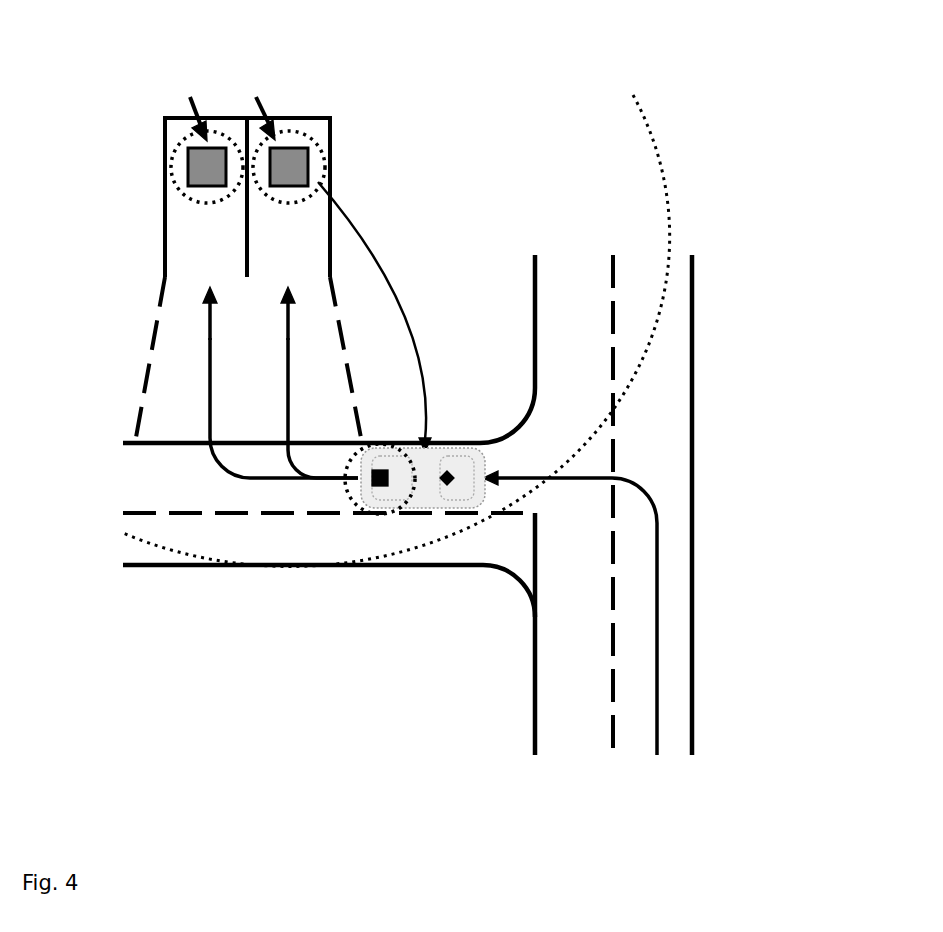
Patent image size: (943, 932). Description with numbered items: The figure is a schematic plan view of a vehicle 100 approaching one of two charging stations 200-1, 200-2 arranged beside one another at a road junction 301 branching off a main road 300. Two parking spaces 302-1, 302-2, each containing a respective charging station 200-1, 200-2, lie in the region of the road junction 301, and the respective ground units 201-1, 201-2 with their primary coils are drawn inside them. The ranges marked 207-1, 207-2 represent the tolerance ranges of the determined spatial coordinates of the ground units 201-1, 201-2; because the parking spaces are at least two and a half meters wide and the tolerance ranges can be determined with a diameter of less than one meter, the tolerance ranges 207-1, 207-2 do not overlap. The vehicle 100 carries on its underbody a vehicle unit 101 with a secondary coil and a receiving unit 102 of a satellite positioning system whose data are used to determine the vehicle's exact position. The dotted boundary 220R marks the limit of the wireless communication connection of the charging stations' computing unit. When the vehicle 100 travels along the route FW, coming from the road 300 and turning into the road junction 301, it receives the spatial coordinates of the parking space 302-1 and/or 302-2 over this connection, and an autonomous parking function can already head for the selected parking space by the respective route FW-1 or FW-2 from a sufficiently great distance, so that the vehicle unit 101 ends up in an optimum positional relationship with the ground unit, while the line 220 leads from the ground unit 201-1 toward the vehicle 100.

The vehicle 100 is at (452, 450).
The vehicle unit 101 is at (378, 490).
The receiving unit 102 is at (446, 490).
The charging station 200-1 is at (289, 138).
The charging station 200-2 is at (207, 138).
The ground unit 201-1 is at (312, 164).
The ground unit 201-2 is at (171, 150).
The tolerance range 207-1 is at (288, 204).
The tolerance range 207-2 is at (207, 204).
The travel path to target 220 is at (395, 298).
The limit of wireless communication connection 220R is at (658, 135).
The main road 300 is at (702, 520).
The road junction 301 is at (137, 555).
The parking space 302-1 is at (312, 223).
The parking space 302-2 is at (182, 218).
The route FW is at (658, 598).
The route FW-1 is at (286, 395).
The route FW-2 is at (208, 333).